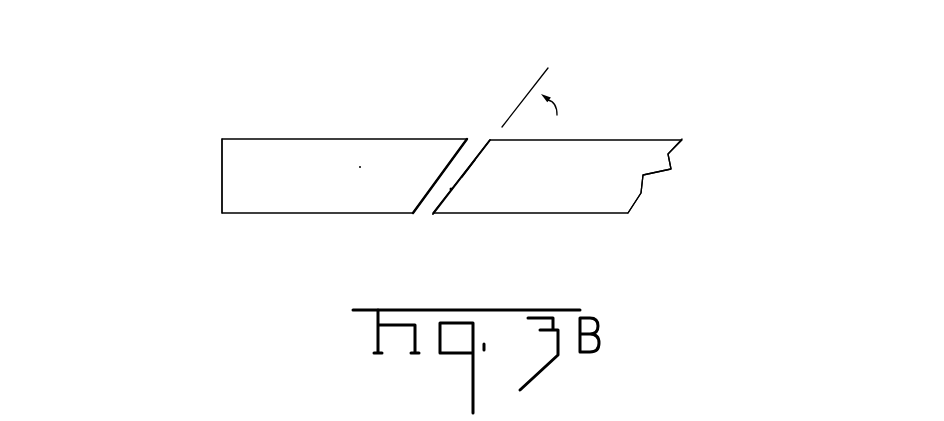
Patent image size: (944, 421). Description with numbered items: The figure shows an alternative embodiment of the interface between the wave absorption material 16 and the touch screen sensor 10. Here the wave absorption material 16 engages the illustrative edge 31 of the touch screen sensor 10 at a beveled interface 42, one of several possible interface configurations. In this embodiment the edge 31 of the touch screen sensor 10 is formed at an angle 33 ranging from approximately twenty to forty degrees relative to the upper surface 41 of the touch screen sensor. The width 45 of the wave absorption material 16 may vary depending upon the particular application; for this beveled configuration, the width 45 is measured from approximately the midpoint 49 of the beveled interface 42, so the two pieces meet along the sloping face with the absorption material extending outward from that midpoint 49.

The touch screen sensor 10 is at (668, 138).
The wave absorption material 16 is at (222, 177).
The edge 31 is at (451, 189).
The angle 33 is at (557, 128).
The upper surface 41 is at (608, 139).
The beveled interface 42 is at (420, 226).
The width 45 is at (276, 128).
The midpoint 49 is at (485, 181).